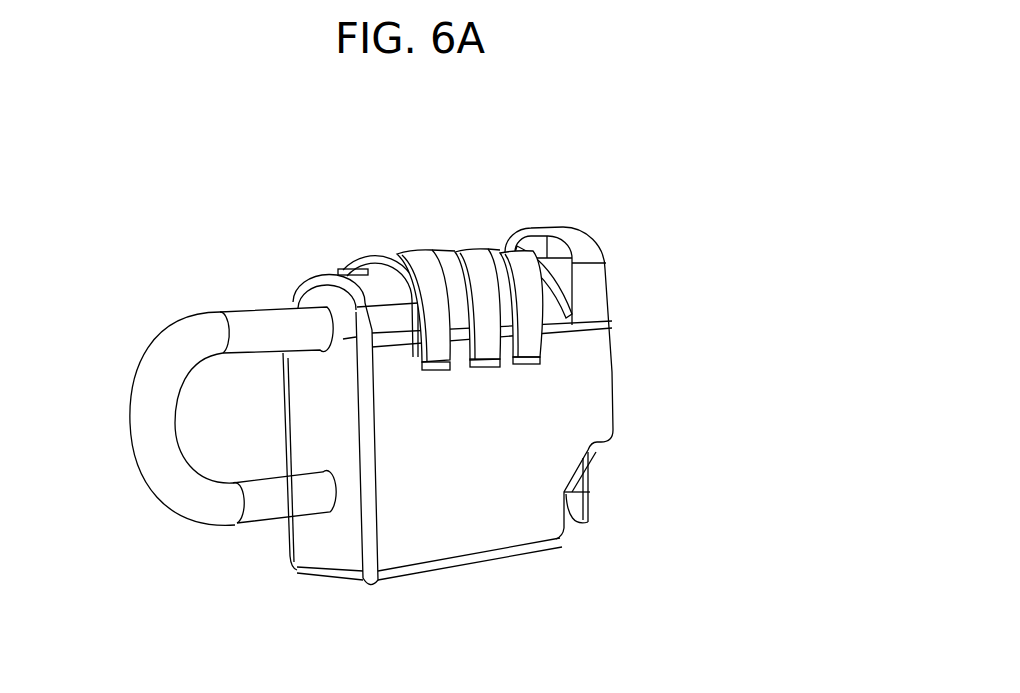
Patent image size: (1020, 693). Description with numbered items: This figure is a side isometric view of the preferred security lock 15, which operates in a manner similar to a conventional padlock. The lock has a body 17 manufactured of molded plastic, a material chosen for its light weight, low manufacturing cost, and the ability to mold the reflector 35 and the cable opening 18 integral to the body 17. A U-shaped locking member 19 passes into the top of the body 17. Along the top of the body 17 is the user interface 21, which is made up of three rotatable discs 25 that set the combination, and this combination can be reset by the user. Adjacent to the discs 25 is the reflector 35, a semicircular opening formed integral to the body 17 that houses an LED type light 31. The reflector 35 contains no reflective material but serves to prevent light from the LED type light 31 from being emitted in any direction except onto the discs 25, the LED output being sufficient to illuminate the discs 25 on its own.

The security lock 15 is at (558, 169).
The body 17 is at (430, 525).
The cable opening 18 is at (590, 513).
The locking member 19 is at (152, 418).
The user interface 21 is at (425, 240).
The rotatable discs 25 is at (390, 268).
The LED type light 31 is at (543, 250).
The reflector 35 is at (575, 250).